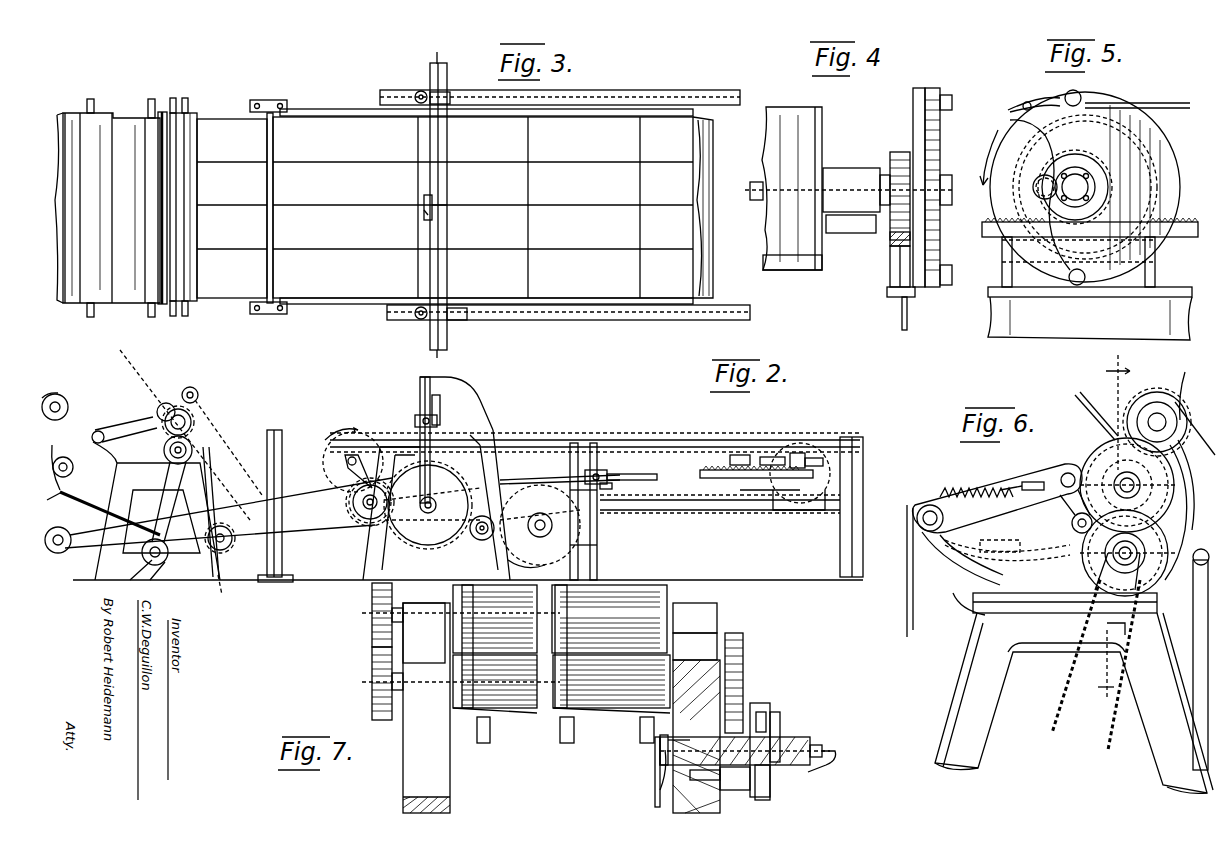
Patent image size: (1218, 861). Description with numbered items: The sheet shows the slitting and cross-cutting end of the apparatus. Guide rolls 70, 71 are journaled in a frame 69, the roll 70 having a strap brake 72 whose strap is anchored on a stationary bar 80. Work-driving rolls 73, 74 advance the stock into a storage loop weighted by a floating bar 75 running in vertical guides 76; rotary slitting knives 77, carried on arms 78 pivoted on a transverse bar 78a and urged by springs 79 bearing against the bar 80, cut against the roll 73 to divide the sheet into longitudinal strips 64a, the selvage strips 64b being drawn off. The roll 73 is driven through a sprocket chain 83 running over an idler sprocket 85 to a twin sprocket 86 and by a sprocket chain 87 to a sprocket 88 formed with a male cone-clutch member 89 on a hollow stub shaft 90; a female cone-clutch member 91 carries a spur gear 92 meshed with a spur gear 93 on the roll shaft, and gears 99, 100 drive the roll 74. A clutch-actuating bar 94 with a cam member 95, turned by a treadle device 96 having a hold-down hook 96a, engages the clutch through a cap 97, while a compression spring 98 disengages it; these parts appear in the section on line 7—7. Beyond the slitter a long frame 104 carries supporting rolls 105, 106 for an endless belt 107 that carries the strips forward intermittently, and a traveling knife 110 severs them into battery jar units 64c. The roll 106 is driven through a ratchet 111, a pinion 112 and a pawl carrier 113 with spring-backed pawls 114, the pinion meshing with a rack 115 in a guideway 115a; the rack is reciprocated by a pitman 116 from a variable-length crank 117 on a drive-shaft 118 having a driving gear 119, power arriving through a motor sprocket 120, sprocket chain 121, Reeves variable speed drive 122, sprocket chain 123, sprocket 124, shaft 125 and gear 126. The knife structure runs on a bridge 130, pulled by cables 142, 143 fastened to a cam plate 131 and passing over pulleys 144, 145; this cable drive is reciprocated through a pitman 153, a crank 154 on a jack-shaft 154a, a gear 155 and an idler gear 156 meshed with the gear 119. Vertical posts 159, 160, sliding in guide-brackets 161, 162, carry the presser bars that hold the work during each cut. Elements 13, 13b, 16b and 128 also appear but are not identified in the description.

In FIG. 6, the section line 7— 7 is at (1109, 519).
In FIG. 2, the guide roller 13 is at (62, 398).
In FIG. 2, the guide roller 13b is at (48, 395).
In FIG. 2, the roller 16b is at (56, 556).
In FIG. 3, the longitudinal strips 64a is at (232, 208).
In FIG. 7, the longitudinal strips 64a is at (560, 715).
In FIG. 3, the selvage strips 64b is at (120, 344).
In FIG. 2, the selvage strips 64b is at (185, 430).
In FIG. 7, the selvage strips 64b is at (452, 586).
In FIG. 6, the selvage strips 64b is at (1089, 406).
In FIG. 3, the battery jar units 64c is at (596, 201).
In FIG. 6, the battery jar units 64c is at (1191, 385).
In FIG. 2, the frame 69 is at (115, 466).
In FIG. 7, the frame 69 is at (720, 640).
In FIG. 6, the frame 69 is at (990, 560).
In FIG. 3, the guide roll 70 is at (90, 306).
In FIG. 2, the guide roll 70 is at (98, 431).
In FIG. 6, the guide roll 70 is at (927, 505).
In FIG. 3, the guide roll 71 is at (150, 306).
In FIG. 2, the guide roll 71 is at (165, 422).
In FIG. 6, the guide roll 71 is at (1062, 476).
In FIG. 2, the strap brake 72 is at (120, 432).
In FIG. 6, the strap brake 72 is at (942, 548).
In FIG. 3, the work-driving roll 73 is at (160, 218).
In FIG. 2, the work-driving roll 73 is at (168, 403).
In FIG. 7, the work-driving roll 73 is at (660, 662).
In FIG. 3, the work-driving roll 74 is at (172, 250).
In FIG. 2, the work-driving roll 74 is at (193, 390).
In FIG. 7, the work-driving roll 74 is at (717, 610).
In FIG. 6, the work-driving roll 74 is at (1160, 395).
In FIG. 3, the transverse floating bar 75 is at (273, 200).
In FIG. 2, the transverse floating bar 75 is at (308, 498).
In FIG. 6, the transverse floating bar 75 is at (1186, 510).
In FIG. 3, the vertical guides 76 is at (266, 100).
In FIG. 2, the vertical guides 76 is at (278, 430).
In FIG. 7, the rotary slitting knives 77 is at (478, 718).
In FIG. 6, the rotary slitting knives 77 is at (1150, 545).
In FIG. 7, the arms 78 is at (485, 743).
In FIG. 6, the arms 78 is at (1016, 539).
In FIG. 6, the transverse bar 78a is at (1056, 577).
In FIG. 6, the springs 79 is at (1030, 560).
In FIG. 6, the stationary bar 80 is at (995, 548).
In FIG. 2, the sprocket chain 83 is at (95, 545).
In FIG. 2, the idler sprocket 85 is at (72, 455).
In FIG. 2, the twin sprocket 86 is at (158, 565).
In FIG. 2, the sprocket chain 87 is at (180, 487).
In FIG. 6, the sprocket chain 87 is at (1068, 672).
In FIG. 2, the sprocket 88 is at (192, 448).
In FIG. 7, the sprocket 88 is at (785, 737).
In FIG. 6, the sprocket 88 is at (1138, 575).
In FIG. 7, the male cone-clutch member 89 is at (778, 715).
In FIG. 7, the hollow fixed stub shaft 90 is at (660, 760).
In FIG. 7, the female cone-clutch member 91 is at (762, 703).
In FIG. 7, the spur gear 92 is at (735, 780).
In FIG. 6, the spur gear 92 is at (1108, 625).
In FIG. 7, the spur gear 93 is at (745, 660).
In FIG. 6, the spur gear 93 is at (1100, 458).
In FIG. 7, the clutch-actuating bar 94 is at (830, 758).
In FIG. 6, the clutch-actuating bar 94 is at (1140, 555).
In FIG. 7, the cam member 95 is at (660, 795).
In FIG. 2, the treadle device 96 is at (212, 458).
In FIG. 7, the treadle device 96 is at (656, 780).
In FIG. 6, the treadle device 96 is at (1193, 605).
In FIG. 2, the hold-down hook 96a is at (226, 593).
In FIG. 7, the cap 97 is at (818, 745).
In FIG. 6, the cap 97 is at (1080, 600).
In FIG. 7, the compression spring 98 is at (770, 780).
In FIG. 7, the gear 99 is at (372, 668).
In FIG. 6, the gear 99 is at (1175, 486).
In FIG. 2, the gear 100 is at (432, 378).
In FIG. 7, the gear 100 is at (372, 598).
In FIG. 3, the long frame 104 is at (663, 84).
In FIG. 4, the long frame 104 is at (900, 310).
In FIG. 5, the long frame 104 is at (1170, 306).
In FIG. 2, the long frame 104 is at (640, 440).
In FIG. 3, the supporting roll 105 is at (345, 306).
In FIG. 2, the supporting roll 105 is at (355, 432).
In FIG. 4, the supporting roll 106 is at (825, 130).
In FIG. 2, the supporting roll 106 is at (800, 505).
In FIG. 6, the supporting roll 106 is at (1196, 421).
In FIG. 3, the endless belt 107 is at (318, 303).
In FIG. 4, the endless belt 107 is at (778, 108).
In FIG. 2, the endless belt 107 is at (700, 440).
In FIG. 3, the traveling knife 110 is at (424, 200).
In FIG. 4, the ratchet 111 is at (940, 140).
In FIG. 5, the ratchet 111 is at (1140, 155).
In FIG. 4, the pinion 112 is at (898, 152).
In FIG. 5, the pinion 112 is at (1035, 180).
In FIG. 4, the pawl carrier 113 is at (913, 100).
In FIG. 5, the pawl carrier 113 is at (1178, 175).
In FIG. 4, the spring-backed pawls 114 is at (943, 95).
In FIG. 5, the spring-backed pawls 114 is at (1065, 95).
In FIG. 4, the rack 115 is at (890, 240).
In FIG. 5, the rack 115 is at (1000, 237).
In FIG. 2, the rack 115 is at (735, 468).
In FIG. 4, the guideway 115a is at (893, 262).
In FIG. 5, the guideway 115a is at (1005, 272).
In FIG. 2, the guideway 115a is at (825, 488).
In FIG. 2, the pitman 116 is at (520, 480).
In FIG. 2, the variable-length crank 117 is at (390, 525).
In FIG. 2, the drive-shaft 118 is at (432, 545).
In FIG. 2, the driving gear 119 is at (480, 542).
In FIG. 2, the motor sprocket 120 is at (150, 565).
In FIG. 2, the sprocket chain 121 is at (101, 513).
In FIG. 2, the Reeves variable speed drive 122 is at (222, 524).
In FIG. 2, the sprocket chain 123 is at (315, 470).
In FIG. 2, the sprocket 124 is at (355, 525).
In FIG. 2, the shaft 125 is at (352, 505).
In FIG. 2, the gear 126 is at (345, 560).
In FIG. 3, the stop 128 is at (447, 212).
In FIG. 3, the guide-way or bridge 130 is at (448, 185).
In FIG. 2, the guide-way or bridge 130 is at (460, 395).
In FIG. 3, the cam plate 131 is at (424, 218).
In FIG. 3, the cable 142 is at (418, 136).
In FIG. 3, the cable 143 is at (418, 270).
In FIG. 3, the pulley 144 is at (438, 62).
In FIG. 3, the pulley 145 is at (440, 348).
In FIG. 2, the pulley 145 is at (442, 412).
In FIG. 2, the pitman 153 is at (542, 532).
In FIG. 2, the crank 154 is at (585, 475).
In FIG. 2, the jack-shaft 154a is at (606, 490).
In FIG. 2, the gear 155 is at (601, 511).
In FIG. 2, the idler gear 156 is at (526, 569).
In FIG. 3, the vertical post 159 is at (416, 93).
In FIG. 3, the vertical post 160 is at (416, 318).
In FIG. 3, the guide-bracket 161 is at (445, 92).
In FIG. 3, the guide-bracket 162 is at (465, 318).
In FIG. 2, the guide-bracket 162 is at (418, 385).